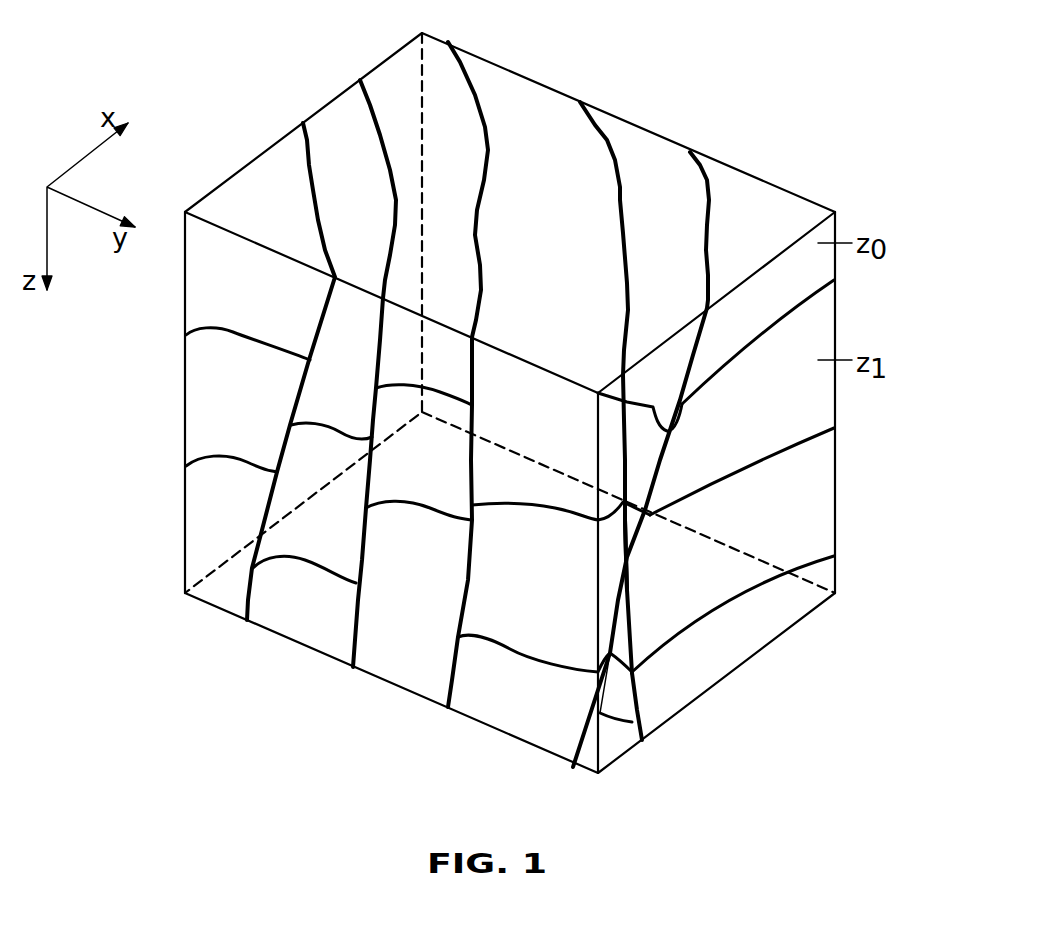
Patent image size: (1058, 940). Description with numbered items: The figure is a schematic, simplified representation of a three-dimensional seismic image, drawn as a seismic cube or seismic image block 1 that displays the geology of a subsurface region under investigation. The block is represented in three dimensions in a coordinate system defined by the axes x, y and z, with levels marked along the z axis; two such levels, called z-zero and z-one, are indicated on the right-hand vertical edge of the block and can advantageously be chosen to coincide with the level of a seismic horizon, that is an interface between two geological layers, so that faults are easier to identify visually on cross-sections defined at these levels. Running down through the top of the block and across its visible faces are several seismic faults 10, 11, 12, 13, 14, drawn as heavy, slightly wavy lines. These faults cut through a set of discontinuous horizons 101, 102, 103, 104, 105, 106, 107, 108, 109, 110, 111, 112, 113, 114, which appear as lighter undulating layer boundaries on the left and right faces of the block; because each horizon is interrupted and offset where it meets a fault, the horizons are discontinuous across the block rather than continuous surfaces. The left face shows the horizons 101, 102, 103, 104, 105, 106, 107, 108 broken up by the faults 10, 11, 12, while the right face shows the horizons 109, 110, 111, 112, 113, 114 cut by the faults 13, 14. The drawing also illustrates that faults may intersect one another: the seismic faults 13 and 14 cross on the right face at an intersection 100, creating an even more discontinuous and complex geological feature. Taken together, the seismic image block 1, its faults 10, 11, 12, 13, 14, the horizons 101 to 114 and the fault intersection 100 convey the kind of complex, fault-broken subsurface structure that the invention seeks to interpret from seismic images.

The seismic image block 1 is at (195, 100).
The seismic fault 10 is at (305, 146).
The seismic fault 11 is at (370, 103).
The seismic fault 12 is at (468, 68).
The seismic fault 13 is at (600, 127).
The seismic fault 14 is at (707, 173).
The intersection 100 is at (628, 565).
The discontinuous horizon 101 is at (188, 333).
The discontinuous horizon 102 is at (187, 465).
The discontinuous horizon 103 is at (288, 560).
The discontinuous horizon 104 is at (335, 430).
The discontinuous horizon 105 is at (412, 505).
The discontinuous horizon 106 is at (447, 398).
The discontinuous horizon 107 is at (507, 648).
The discontinuous horizon 108 is at (550, 507).
The discontinuous horizon 109 is at (810, 293).
The discontinuous horizon 110 is at (808, 440).
The discontinuous horizon 111 is at (808, 567).
The discontinuous horizon 112 is at (614, 718).
The discontinuous horizon 113 is at (636, 718).
The discontinuous horizon 114 is at (670, 431).